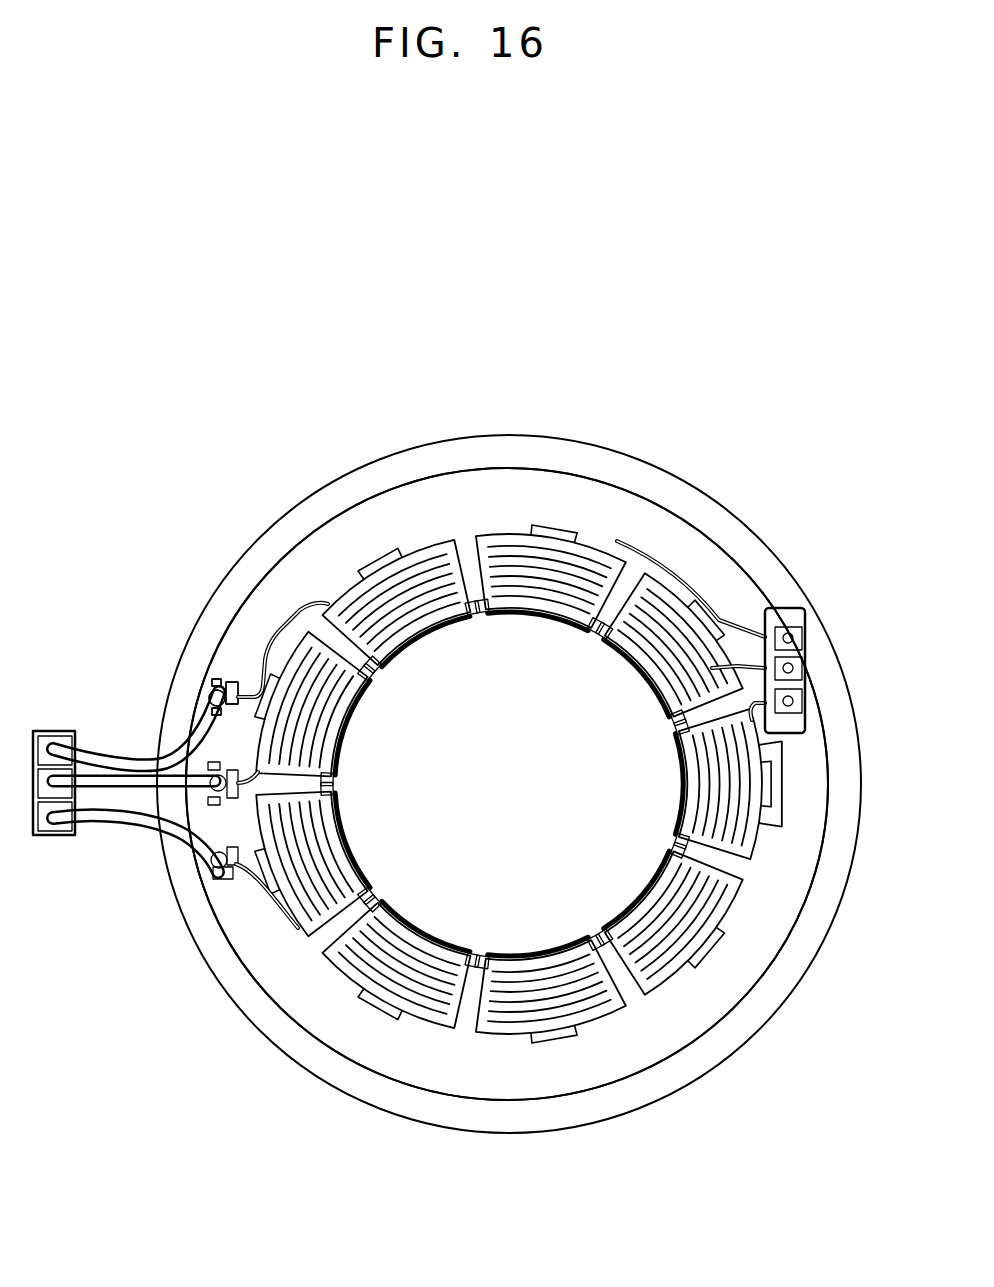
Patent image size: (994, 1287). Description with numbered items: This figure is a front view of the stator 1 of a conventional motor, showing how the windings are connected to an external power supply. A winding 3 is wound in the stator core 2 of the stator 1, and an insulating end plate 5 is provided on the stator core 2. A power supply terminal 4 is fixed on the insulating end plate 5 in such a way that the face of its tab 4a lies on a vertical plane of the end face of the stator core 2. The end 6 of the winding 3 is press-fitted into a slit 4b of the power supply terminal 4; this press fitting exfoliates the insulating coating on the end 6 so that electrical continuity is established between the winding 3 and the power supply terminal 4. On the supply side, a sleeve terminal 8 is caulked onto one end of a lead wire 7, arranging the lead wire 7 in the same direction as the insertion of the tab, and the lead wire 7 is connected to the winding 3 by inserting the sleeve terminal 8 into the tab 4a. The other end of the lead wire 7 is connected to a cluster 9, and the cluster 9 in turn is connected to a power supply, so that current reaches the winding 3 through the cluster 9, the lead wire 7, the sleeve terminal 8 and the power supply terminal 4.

The stator 1 is at (535, 432).
The stator core 2 is at (373, 468).
The winding 3 is at (427, 565).
The power supply terminal 4 is at (233, 687).
The tab 4a is at (213, 688).
The slit 4b is at (234, 683).
The insulating end plate 5 is at (233, 905).
The end of the winding 6 is at (237, 690).
The lead wire 7 is at (170, 711).
The sleeve terminal 8 is at (207, 690).
The cluster 9 is at (53, 838).